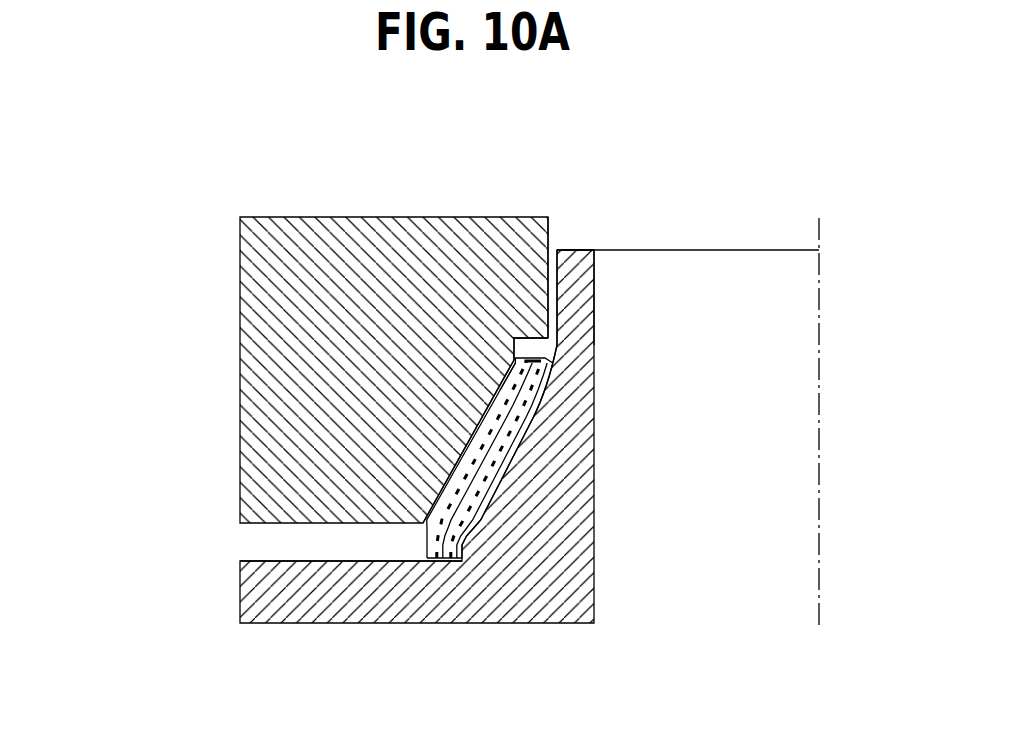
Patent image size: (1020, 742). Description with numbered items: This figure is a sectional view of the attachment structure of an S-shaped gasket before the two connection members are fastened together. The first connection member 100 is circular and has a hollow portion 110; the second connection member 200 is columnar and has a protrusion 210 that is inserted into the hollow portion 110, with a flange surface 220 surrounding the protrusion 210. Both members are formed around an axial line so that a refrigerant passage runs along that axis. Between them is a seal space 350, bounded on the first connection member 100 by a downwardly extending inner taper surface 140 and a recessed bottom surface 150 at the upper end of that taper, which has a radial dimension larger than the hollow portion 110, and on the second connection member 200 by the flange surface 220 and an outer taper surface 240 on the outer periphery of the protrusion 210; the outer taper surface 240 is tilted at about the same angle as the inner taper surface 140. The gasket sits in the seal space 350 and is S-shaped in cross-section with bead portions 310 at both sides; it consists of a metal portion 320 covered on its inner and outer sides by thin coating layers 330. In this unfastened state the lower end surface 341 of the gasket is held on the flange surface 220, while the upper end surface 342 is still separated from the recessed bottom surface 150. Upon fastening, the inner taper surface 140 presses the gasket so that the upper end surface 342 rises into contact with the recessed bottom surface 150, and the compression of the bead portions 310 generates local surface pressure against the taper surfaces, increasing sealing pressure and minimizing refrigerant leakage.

The first connection member 100 is at (215, 368).
The hollow portion 110 is at (550, 237).
The inner taper surface 140 is at (495, 410).
The recessed bottom surface 150 is at (512, 346).
The second connection member 200 is at (232, 600).
The protrusion 210 is at (589, 300).
The flange surface 220 is at (297, 561).
The outer taper surface 240 is at (483, 514).
The bead portions 310 is at (441, 478).
The metal portion 320 is at (548, 362).
The thin coating layers 330 is at (523, 418).
The lower end surface 341 is at (441, 561).
The upper end surface 342 is at (527, 356).
The seal space 350 is at (505, 394).